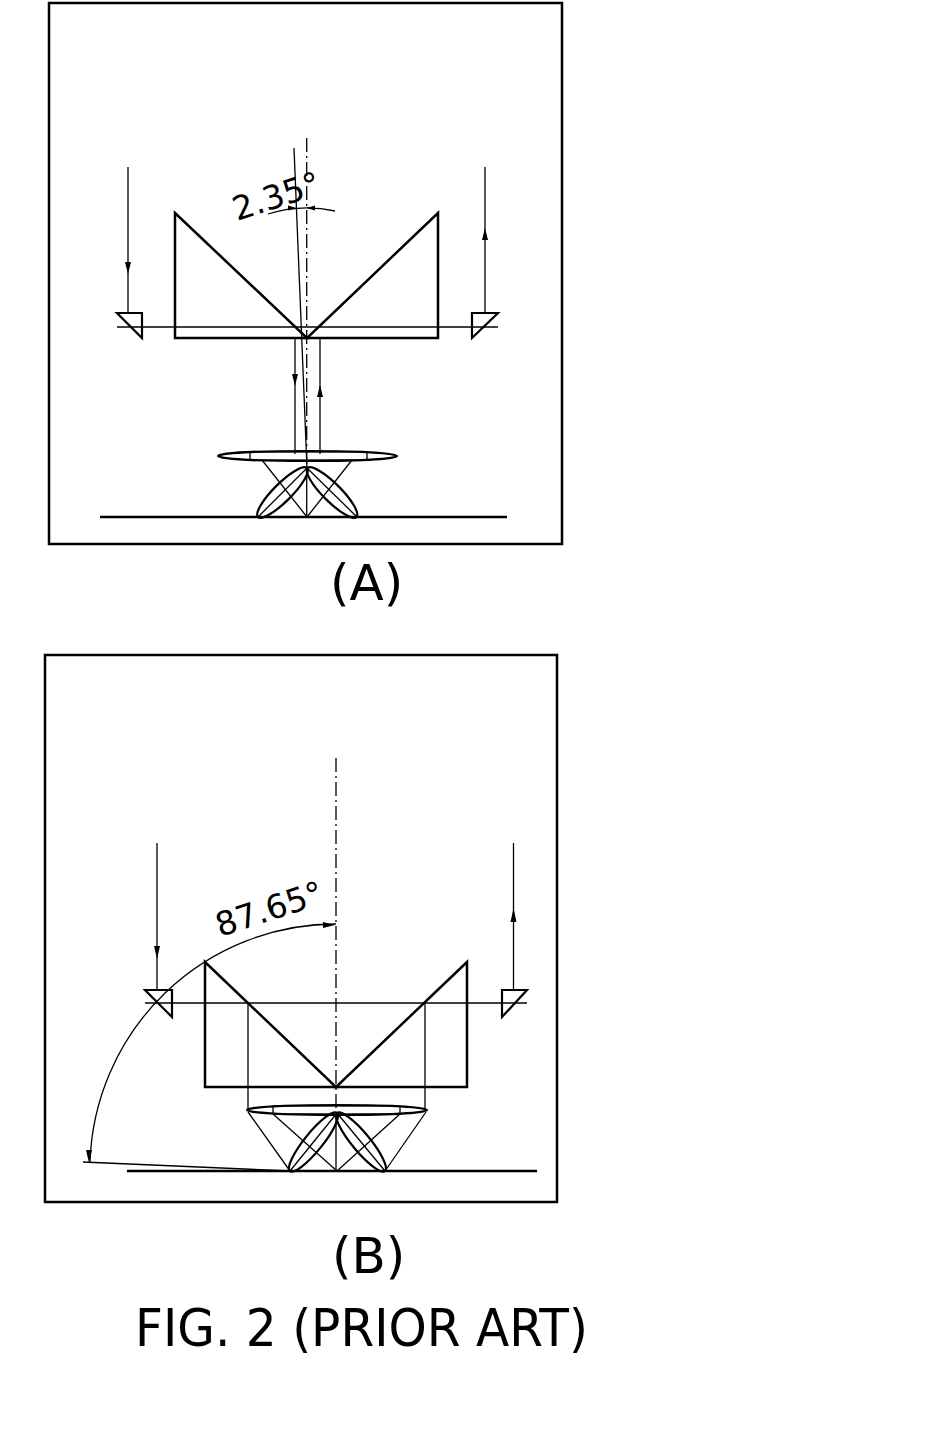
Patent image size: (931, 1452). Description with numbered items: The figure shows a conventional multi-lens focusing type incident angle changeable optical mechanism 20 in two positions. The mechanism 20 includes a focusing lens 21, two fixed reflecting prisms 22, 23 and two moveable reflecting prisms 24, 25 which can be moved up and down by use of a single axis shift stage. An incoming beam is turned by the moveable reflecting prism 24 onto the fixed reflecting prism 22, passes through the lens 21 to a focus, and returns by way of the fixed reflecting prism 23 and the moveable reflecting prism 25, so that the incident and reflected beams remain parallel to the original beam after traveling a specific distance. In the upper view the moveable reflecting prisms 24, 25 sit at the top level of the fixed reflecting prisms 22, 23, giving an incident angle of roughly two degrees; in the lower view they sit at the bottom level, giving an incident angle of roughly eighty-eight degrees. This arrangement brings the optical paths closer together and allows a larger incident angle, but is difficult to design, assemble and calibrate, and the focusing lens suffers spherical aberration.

The multi-lens focusing type incident angle changeable optical mechanism 20 is at (331, 618).
The lens 21 is at (306, 773).
The fixed reflecting prism 22 is at (259, 695).
The fixed reflecting prism 23 is at (384, 695).
The moveable reflecting prism 24 is at (139, 665).
The moveable reflecting prism 25 is at (498, 688).